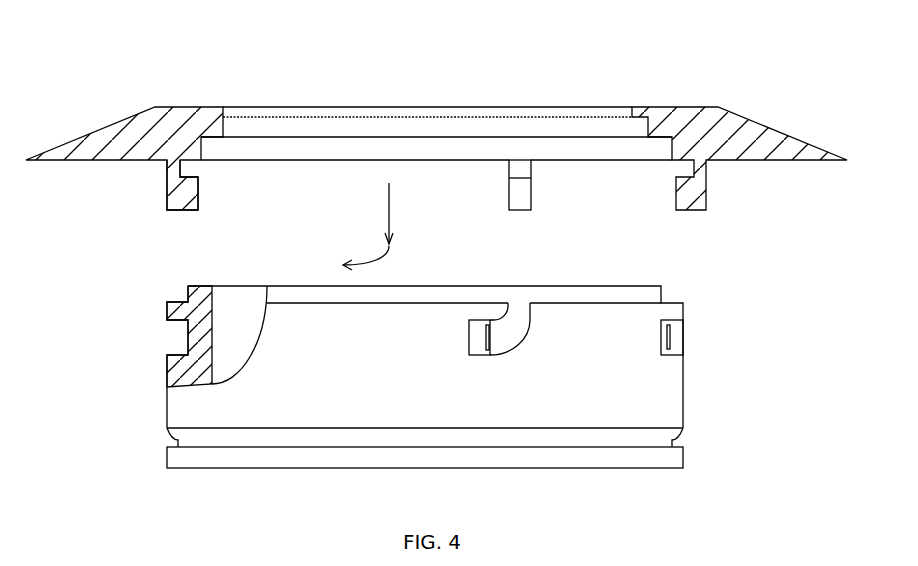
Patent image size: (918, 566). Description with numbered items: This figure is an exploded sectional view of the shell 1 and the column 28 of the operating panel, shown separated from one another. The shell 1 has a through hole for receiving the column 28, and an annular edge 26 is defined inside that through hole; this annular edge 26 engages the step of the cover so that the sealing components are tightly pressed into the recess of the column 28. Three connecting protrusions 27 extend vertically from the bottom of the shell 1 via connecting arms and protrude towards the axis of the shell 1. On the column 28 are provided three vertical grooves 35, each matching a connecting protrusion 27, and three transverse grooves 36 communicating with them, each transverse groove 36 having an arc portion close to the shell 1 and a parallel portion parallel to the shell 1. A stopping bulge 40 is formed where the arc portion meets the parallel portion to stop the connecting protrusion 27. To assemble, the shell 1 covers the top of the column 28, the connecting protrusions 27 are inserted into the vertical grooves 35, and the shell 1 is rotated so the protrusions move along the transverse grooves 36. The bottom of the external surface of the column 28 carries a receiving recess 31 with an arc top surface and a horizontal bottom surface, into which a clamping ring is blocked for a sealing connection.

The shell 1 is at (172, 132).
The annular edge 26 is at (240, 115).
The connecting protrusion 27 is at (167, 205).
The column 28 is at (212, 458).
The receiving recess 31 is at (180, 438).
The vertical groove 35 is at (522, 310).
The transverse groove 36 is at (481, 337).
The stopping bulge 40 is at (488, 325).